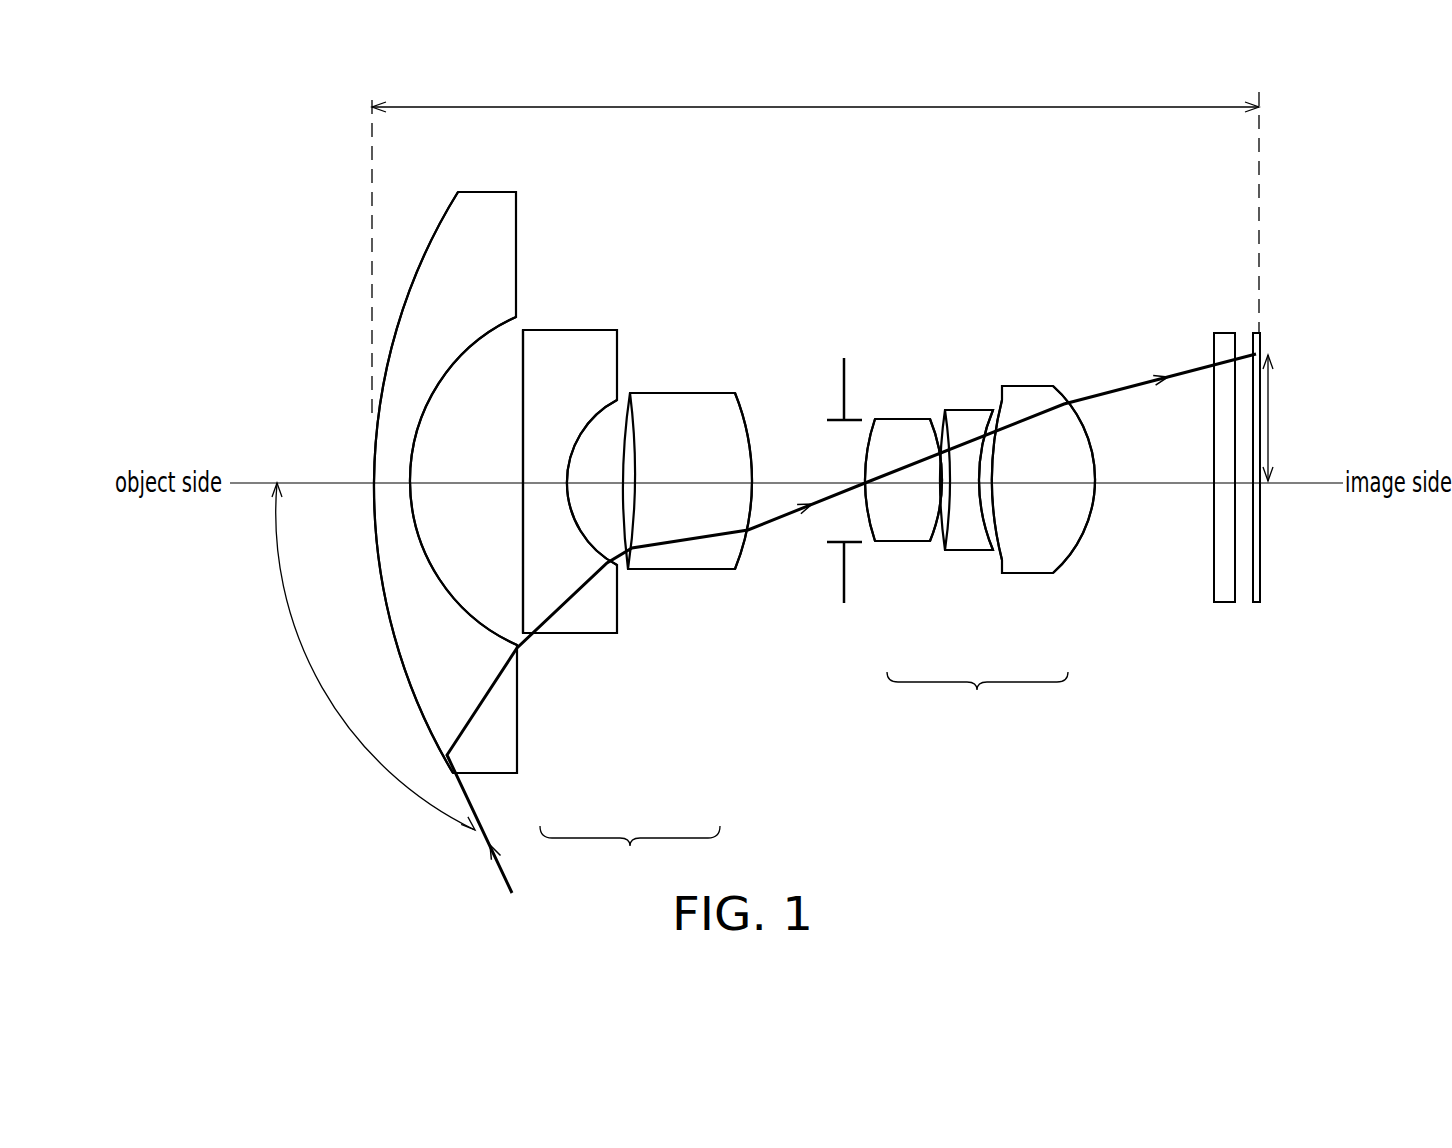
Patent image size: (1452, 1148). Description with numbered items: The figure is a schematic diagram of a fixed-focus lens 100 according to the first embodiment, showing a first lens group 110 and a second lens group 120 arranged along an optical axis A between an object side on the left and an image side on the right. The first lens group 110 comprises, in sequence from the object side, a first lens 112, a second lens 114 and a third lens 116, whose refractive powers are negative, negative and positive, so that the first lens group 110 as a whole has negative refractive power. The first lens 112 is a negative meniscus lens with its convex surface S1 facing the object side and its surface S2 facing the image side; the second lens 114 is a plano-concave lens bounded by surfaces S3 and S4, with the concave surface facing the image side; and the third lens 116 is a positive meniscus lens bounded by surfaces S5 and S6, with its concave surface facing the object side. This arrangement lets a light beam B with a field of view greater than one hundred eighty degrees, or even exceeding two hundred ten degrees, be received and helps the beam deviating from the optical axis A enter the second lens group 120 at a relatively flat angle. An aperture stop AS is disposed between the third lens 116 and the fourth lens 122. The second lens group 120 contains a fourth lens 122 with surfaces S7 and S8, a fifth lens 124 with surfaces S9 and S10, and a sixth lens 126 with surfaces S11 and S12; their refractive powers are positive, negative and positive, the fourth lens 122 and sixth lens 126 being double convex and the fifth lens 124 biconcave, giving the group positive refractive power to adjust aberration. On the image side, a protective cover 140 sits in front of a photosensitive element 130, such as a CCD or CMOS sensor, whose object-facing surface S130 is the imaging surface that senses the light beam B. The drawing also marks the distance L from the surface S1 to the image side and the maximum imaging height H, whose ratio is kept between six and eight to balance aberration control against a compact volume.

The fixed-focus lens 100 is at (1260, 773).
The first lens group 110 is at (630, 853).
The first lens 112 is at (500, 743).
The second lens 114 is at (580, 625).
The third lens 116 is at (680, 565).
The second lens group 120 is at (977, 698).
The fourth lens 122 is at (905, 530).
The fifth lens 124 is at (968, 552).
The sixth lens 126 is at (1035, 548).
The photosensitive element 130 is at (1257, 598).
The protective cover 140 is at (1224, 598).
The aperture stop AS is at (841, 377).
The surface of the first lens facing the object side S1 is at (418, 262).
The surface of the first lens facing the image side S2 is at (445, 380).
The surface of the second lens facing the object side S3 is at (517, 358).
The surface of the second lens facing the image side S4 is at (573, 453).
The surface of the third lens facing the object side S5 is at (627, 455).
The surface of the third lens facing the image side S6 is at (750, 428).
The surface of the fourth lens facing the object side S7 is at (867, 440).
The surface of the fourth lens facing the image side S8 is at (938, 443).
The surface of the fifth lens facing the object side S9 is at (947, 442).
The surface of the fifth lens facing the image side S10 is at (997, 423).
The surface of the sixth lens facing the object side S11 is at (995, 432).
The surface of the sixth lens facing the image side S12 is at (1063, 392).
The surface of the photosensitive element facing the object side S130 is at (1253, 337).
The distance from surface S1 to the image side L is at (815, 241).
The maximum imaging height H is at (1279, 418).
The optical axis A is at (297, 482).
The light beam B is at (851, 628).